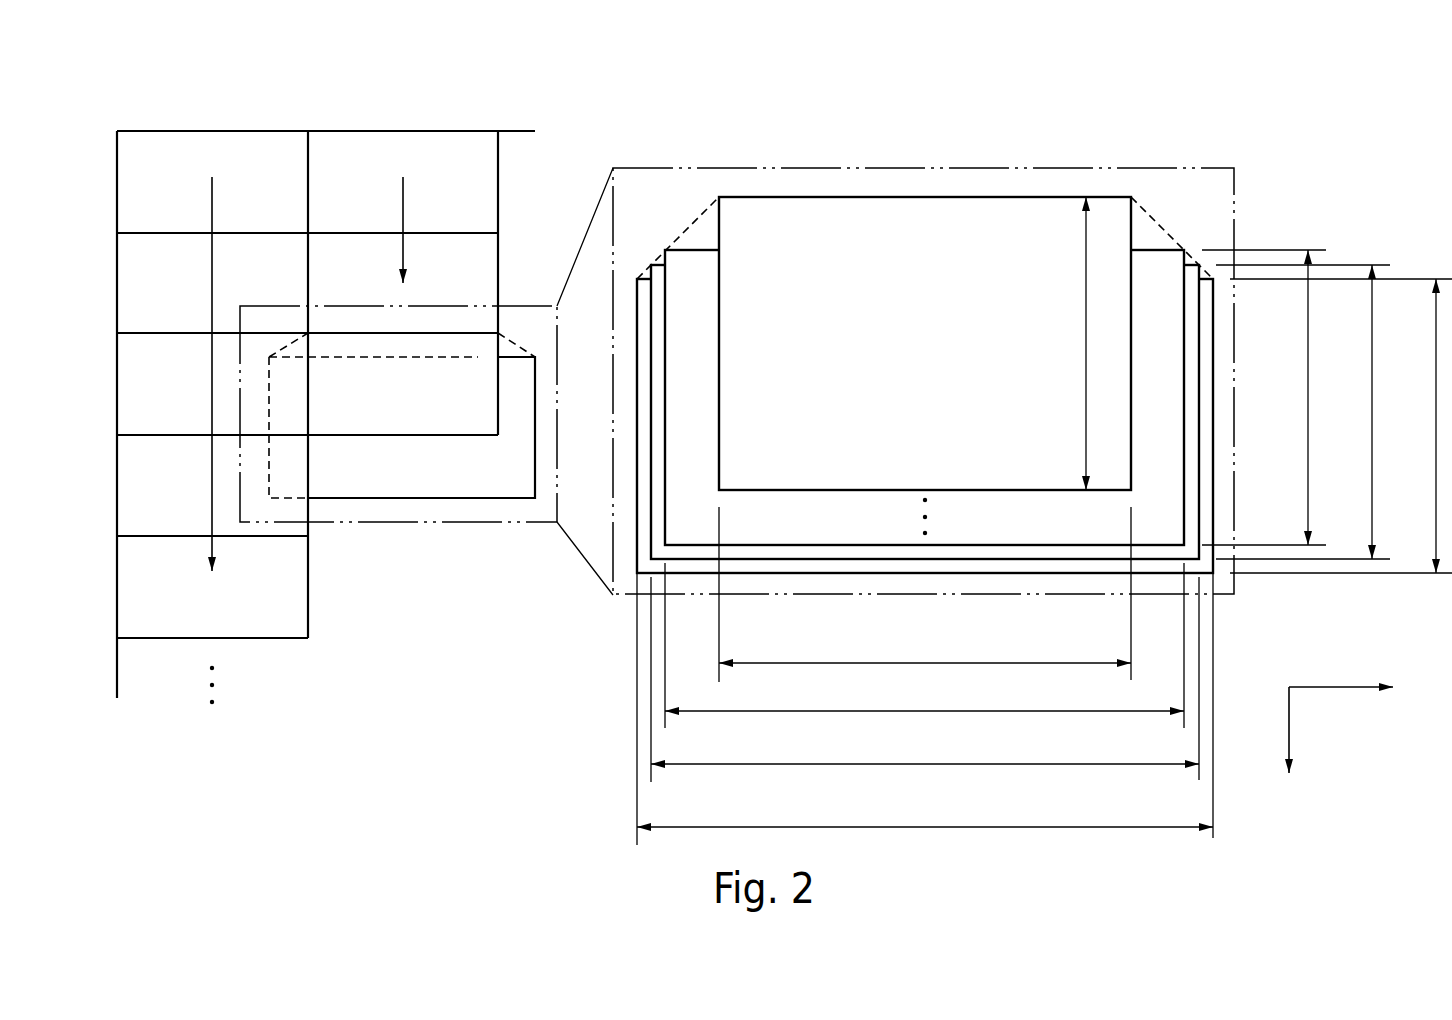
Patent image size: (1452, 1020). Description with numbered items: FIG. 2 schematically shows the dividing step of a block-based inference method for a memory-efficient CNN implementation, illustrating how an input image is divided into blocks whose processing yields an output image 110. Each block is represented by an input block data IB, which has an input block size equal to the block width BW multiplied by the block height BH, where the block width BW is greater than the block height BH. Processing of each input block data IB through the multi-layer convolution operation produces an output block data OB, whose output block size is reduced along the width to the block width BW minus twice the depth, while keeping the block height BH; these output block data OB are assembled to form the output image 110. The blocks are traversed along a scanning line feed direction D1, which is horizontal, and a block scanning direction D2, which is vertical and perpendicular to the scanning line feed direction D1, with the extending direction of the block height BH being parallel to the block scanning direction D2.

The output image 110 is at (244, 130).
The output block data OB is at (445, 333).
The input block data IB is at (410, 499).
The block height BH is at (1244, 385).
The block width BW is at (925, 676).
The scanning line feed direction D1 is at (1367, 689).
The block scanning direction D2 is at (1288, 753).